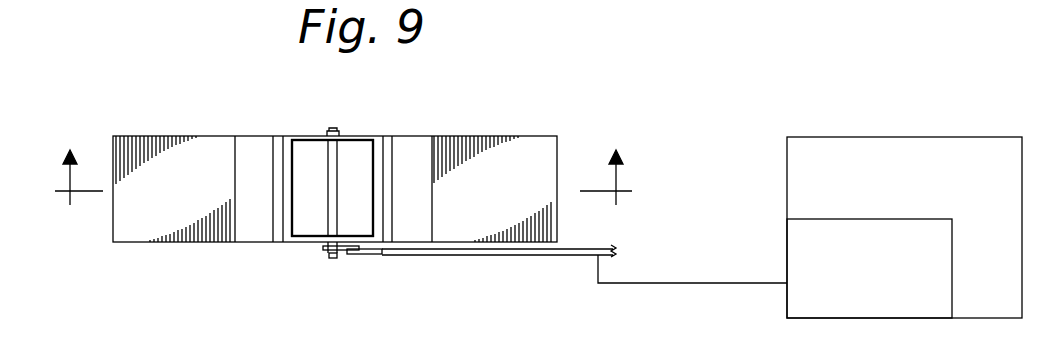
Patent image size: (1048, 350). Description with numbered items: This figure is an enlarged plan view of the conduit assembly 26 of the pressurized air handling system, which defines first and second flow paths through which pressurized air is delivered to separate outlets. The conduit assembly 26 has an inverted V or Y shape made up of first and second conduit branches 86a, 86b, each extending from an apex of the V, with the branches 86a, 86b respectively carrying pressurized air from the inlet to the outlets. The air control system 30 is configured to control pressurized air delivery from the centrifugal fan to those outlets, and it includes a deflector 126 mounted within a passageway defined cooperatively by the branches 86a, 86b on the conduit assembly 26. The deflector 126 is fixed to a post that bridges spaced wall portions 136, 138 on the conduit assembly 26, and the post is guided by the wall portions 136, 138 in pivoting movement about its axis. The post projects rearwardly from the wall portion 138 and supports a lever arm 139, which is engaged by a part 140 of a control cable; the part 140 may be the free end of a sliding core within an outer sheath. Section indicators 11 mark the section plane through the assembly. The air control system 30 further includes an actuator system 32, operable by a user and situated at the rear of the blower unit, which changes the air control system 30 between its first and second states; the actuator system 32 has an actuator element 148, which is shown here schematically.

The conduit assembly 26 is at (249, 136).
The first conduit branch 86a is at (468, 136).
The second conduit branch 86b is at (200, 243).
The wall portion 136 is at (315, 136).
The wall portion 138 is at (298, 240).
The deflector 126 is at (345, 185).
The lever arm 139 is at (328, 207).
The part of control cable 140 is at (371, 256).
The section line 11 is at (341, 186).
The air control system 30 is at (697, 146).
The actuator system 32 is at (904, 227).
The actuator element 148 is at (869, 268).